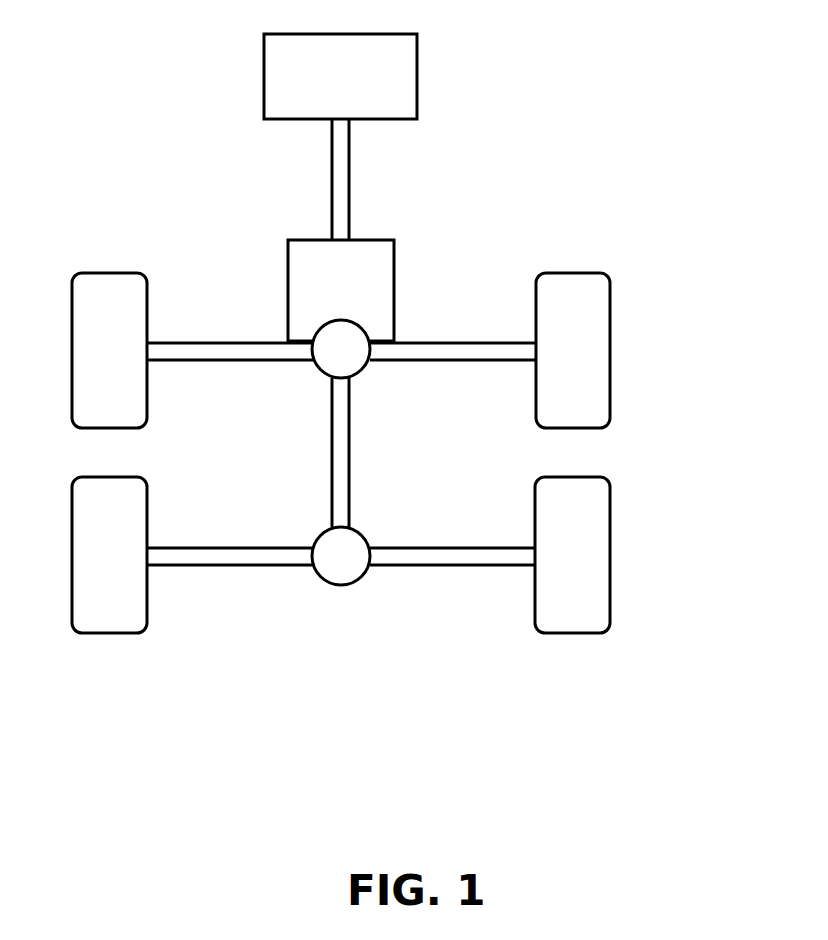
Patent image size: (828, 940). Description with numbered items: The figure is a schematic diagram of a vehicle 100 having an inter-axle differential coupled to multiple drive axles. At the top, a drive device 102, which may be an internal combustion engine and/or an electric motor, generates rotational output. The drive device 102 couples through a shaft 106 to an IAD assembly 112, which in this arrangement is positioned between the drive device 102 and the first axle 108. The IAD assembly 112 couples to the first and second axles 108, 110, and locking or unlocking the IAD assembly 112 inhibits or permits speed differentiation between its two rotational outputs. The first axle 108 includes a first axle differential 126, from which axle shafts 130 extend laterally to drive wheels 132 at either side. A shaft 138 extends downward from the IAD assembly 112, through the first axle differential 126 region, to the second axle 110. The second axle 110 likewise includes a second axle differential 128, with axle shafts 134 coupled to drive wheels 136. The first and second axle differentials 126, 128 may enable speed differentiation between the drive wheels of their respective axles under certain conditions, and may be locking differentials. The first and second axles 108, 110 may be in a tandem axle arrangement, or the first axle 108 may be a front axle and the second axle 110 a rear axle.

The vehicle 100 is at (666, 102).
The drive device 102 is at (418, 68).
The shaft 106 is at (350, 136).
The first axle 108 is at (247, 430).
The second axle 110 is at (272, 588).
The IAD assembly 112 is at (395, 272).
The first axle differential 126 is at (320, 371).
The second axle differential 128 is at (318, 534).
The axle shafts 130 is at (242, 363).
The drive wheels 132 is at (71, 307).
The axle shafts 134 is at (177, 547).
The drive wheels 136 is at (71, 508).
The shaft 138 is at (340, 447).